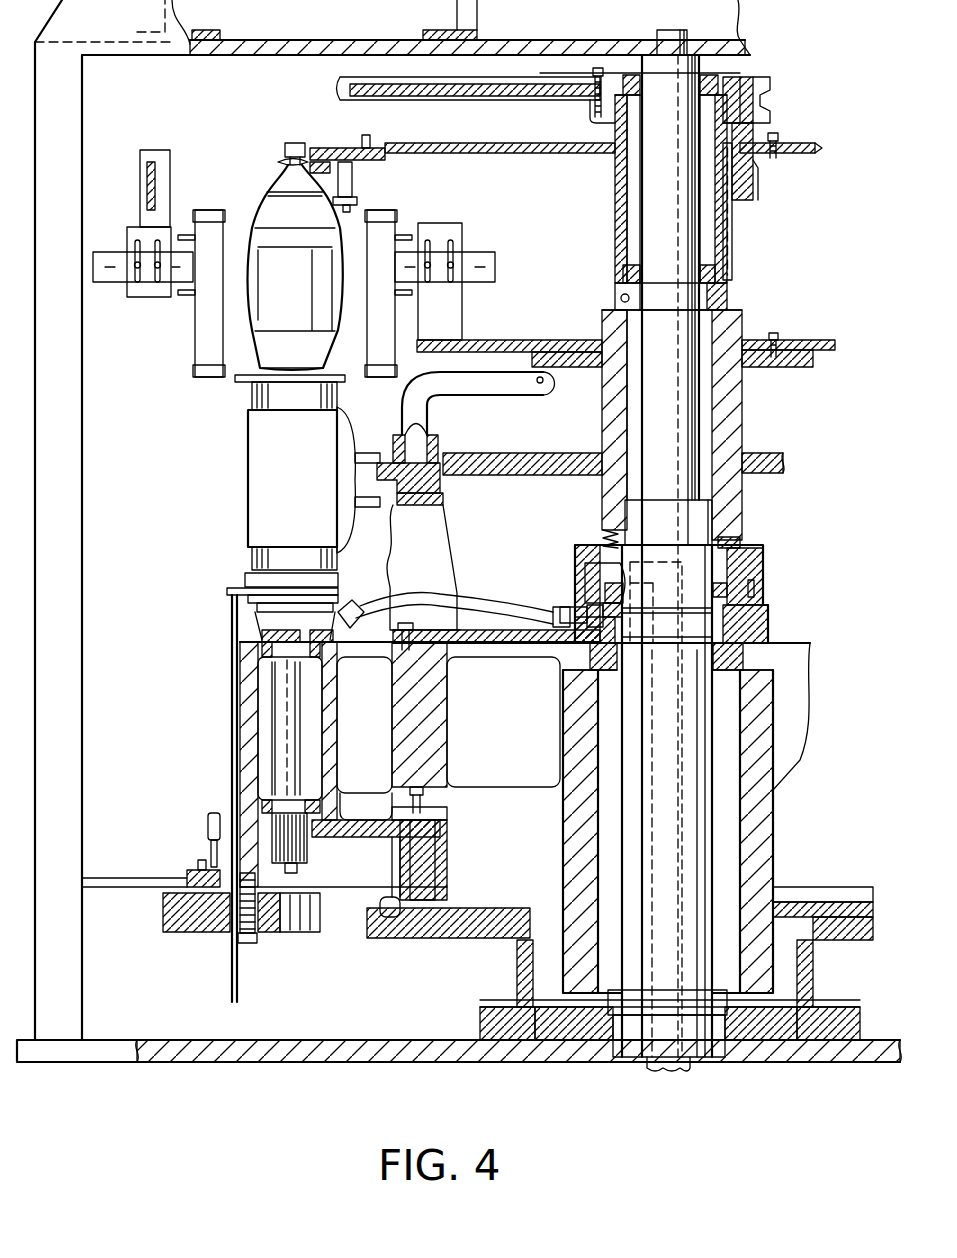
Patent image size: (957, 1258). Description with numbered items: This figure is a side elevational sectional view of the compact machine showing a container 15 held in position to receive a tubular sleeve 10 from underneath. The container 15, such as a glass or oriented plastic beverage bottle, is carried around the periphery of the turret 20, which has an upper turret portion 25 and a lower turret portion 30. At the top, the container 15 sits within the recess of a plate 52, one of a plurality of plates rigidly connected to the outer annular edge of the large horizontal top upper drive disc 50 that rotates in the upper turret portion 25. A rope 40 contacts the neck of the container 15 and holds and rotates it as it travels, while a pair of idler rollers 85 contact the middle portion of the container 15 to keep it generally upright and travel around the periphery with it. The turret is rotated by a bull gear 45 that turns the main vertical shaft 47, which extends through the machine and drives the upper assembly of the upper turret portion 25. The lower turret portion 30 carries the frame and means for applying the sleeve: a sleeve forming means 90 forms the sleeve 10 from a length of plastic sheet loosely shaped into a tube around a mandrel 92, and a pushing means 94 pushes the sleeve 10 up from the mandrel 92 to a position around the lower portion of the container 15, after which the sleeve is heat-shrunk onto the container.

The tubular sleeve 10 is at (337, 323).
The container 15 is at (272, 222).
The turret 20 is at (757, 120).
The upper turret portion 25 is at (322, 145).
The lower turret portion 30 is at (218, 660).
The rope 40 is at (280, 163).
The bull gear 45 is at (186, 940).
The main vertical shaft 47 is at (678, 420).
The top upper drive disc 50 is at (480, 165).
The plate 52 is at (328, 150).
The idler roller 85 is at (362, 190).
The sleeve forming means 90 is at (343, 490).
The mandrel 92 is at (245, 400).
The sleeve pushing means 94 is at (230, 612).